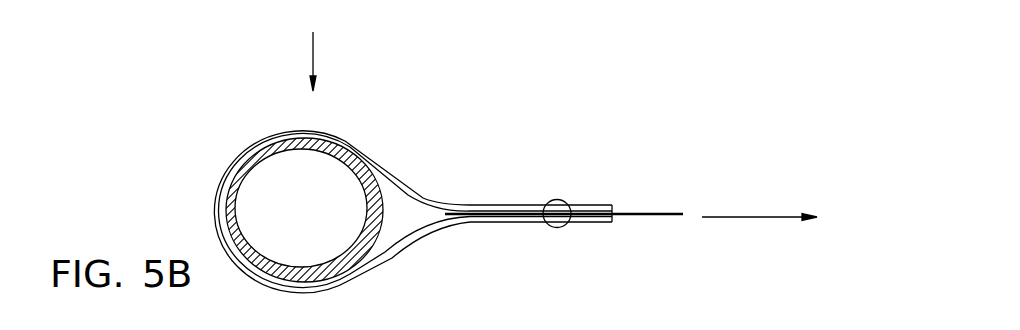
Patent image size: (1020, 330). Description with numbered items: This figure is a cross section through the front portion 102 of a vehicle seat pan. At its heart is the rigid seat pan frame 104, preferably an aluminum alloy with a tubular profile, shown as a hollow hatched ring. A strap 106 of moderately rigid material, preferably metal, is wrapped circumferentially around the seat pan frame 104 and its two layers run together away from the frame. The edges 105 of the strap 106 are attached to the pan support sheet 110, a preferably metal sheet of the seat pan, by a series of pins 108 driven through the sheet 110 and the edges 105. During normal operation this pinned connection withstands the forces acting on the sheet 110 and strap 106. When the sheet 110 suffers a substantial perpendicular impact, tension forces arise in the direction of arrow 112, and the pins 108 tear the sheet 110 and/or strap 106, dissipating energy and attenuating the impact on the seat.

The front portion 102 is at (317, 45).
The seat pan frame 104 is at (238, 188).
The edges 105 is at (613, 206).
The strap 106 is at (352, 147).
The pins 108 is at (562, 200).
The pan support sheet 110 is at (662, 214).
The arrow 112 is at (780, 217).